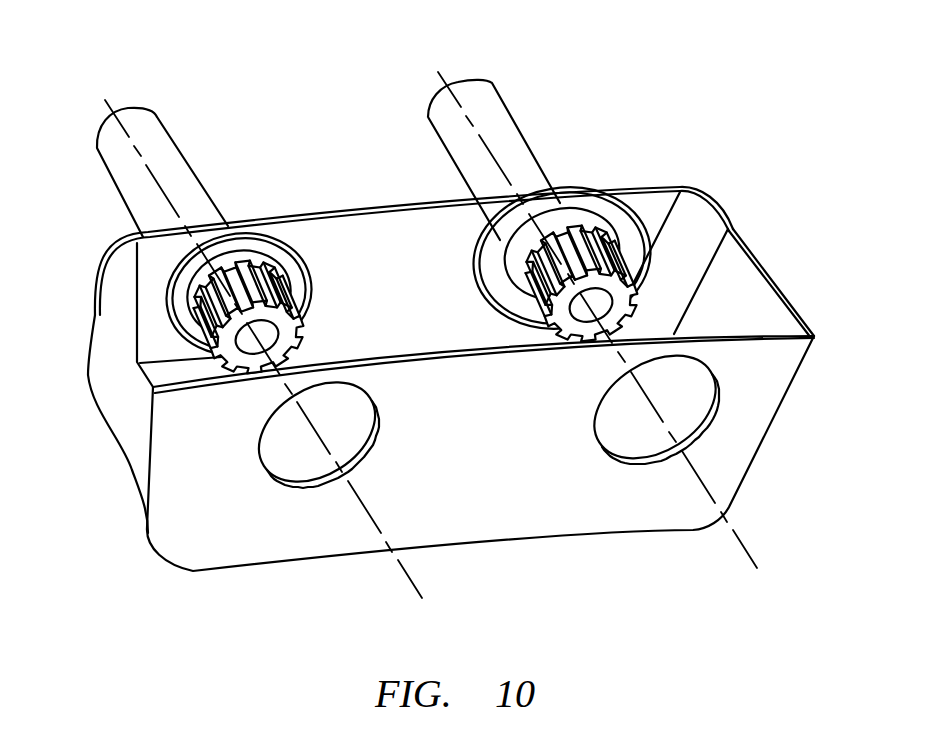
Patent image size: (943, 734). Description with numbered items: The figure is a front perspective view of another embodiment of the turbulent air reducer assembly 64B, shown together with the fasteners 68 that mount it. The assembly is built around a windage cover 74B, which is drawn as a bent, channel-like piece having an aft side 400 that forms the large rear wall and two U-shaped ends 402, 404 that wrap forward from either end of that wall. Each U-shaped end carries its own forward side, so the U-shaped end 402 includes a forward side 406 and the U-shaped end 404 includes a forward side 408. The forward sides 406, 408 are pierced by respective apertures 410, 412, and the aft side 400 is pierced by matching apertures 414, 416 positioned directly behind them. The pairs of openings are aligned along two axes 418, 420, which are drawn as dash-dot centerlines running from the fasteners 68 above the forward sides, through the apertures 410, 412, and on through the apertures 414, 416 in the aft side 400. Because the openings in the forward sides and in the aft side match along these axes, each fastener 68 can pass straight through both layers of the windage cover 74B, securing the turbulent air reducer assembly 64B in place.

The turbulent air reducer assembly 64B is at (676, 163).
The fasteners 68 is at (163, 155).
The windage cover 74B is at (440, 348).
The aft side 400 is at (493, 427).
The U-shaped end 402 is at (133, 428).
The U-shaped end 404 is at (770, 273).
The forward side 406 is at (124, 237).
The forward side 408 is at (628, 213).
The aperture 410 is at (233, 244).
The aperture 412 is at (517, 243).
The aperture 414 is at (360, 452).
The aperture 416 is at (703, 435).
The axis 418 is at (400, 566).
The axis 420 is at (748, 541).